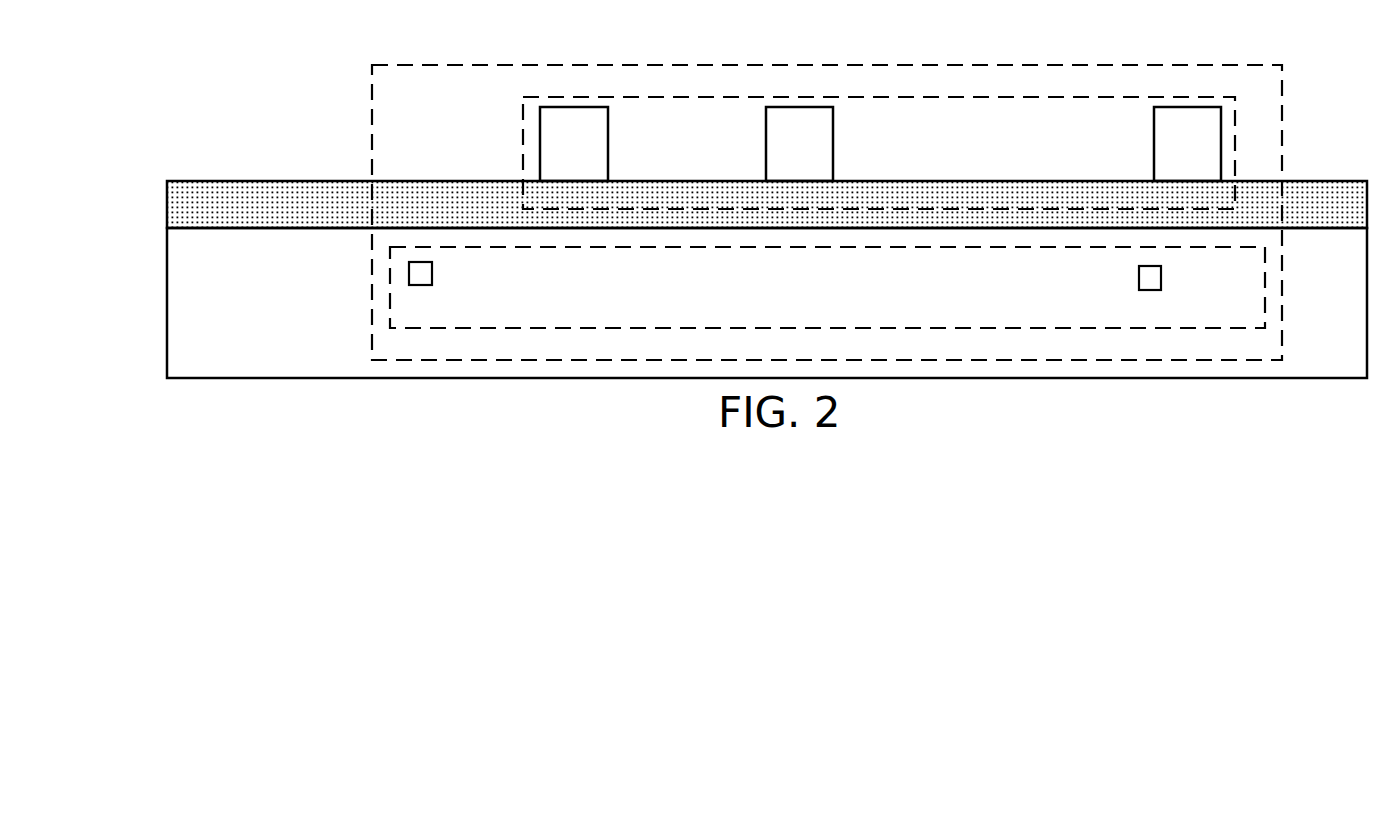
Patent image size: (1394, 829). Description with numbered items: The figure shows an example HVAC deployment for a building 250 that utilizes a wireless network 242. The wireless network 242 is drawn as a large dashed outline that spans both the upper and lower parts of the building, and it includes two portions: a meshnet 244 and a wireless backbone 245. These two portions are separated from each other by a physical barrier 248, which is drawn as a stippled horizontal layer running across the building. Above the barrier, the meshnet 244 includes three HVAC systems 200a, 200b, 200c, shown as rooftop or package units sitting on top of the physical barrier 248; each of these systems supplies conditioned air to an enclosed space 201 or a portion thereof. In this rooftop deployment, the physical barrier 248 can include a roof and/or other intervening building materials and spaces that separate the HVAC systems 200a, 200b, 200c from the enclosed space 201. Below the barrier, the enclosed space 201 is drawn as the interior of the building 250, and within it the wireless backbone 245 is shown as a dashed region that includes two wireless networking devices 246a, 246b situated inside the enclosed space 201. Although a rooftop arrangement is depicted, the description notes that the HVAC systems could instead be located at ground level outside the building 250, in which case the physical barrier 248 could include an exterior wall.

The building 250 is at (173, 97).
The physical barrier 248 is at (257, 188).
The enclosed space 201 is at (184, 280).
The wireless network 242 is at (1284, 65).
The meshnet 244 is at (1237, 113).
The wireless backbone 245 is at (1268, 263).
The HVAC system 200a is at (609, 132).
The HVAC system 200b is at (834, 132).
The HVAC system 200c is at (1153, 143).
The wireless networking device 246a is at (433, 271).
The wireless networking device 246b is at (1162, 277).